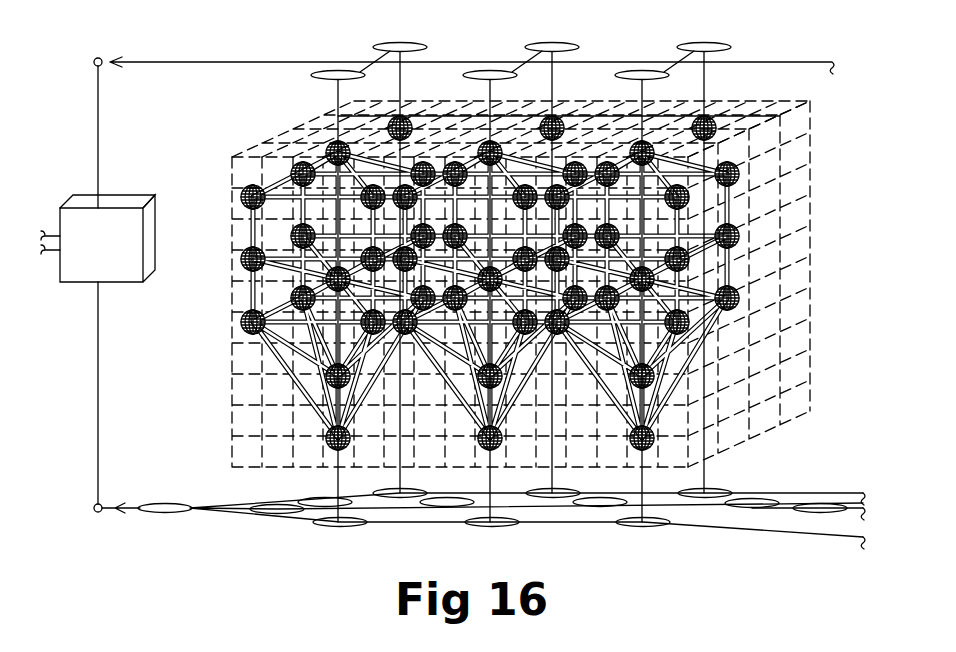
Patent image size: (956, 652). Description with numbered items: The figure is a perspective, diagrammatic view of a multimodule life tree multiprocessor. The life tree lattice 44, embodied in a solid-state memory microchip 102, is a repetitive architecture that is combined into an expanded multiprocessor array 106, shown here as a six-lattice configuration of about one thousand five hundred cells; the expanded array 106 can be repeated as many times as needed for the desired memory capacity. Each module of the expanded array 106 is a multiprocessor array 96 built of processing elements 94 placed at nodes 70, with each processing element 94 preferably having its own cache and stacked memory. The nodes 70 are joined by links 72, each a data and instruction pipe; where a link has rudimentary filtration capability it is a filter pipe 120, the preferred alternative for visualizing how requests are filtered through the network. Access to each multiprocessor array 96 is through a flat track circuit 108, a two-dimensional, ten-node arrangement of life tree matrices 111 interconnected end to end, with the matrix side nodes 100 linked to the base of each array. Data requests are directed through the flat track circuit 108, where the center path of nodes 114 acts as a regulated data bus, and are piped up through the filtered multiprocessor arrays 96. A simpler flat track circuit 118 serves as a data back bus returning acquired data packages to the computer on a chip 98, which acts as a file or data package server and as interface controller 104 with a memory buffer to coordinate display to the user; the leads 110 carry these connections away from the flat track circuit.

The life tree lattice 44 is at (236, 169).
The node 70 is at (325, 381).
The link 72 is at (248, 222).
The processing element 94 is at (415, 120).
The multiprocessor array 96 is at (248, 290).
The computer on a chip 98 is at (110, 203).
The number one node 100 is at (322, 441).
The memory microchip 102 is at (812, 197).
The interface controller 104 is at (110, 276).
The expanded multiprocessor array 106 is at (812, 277).
The flat track circuit 108 is at (268, 518).
The output leads 110 is at (813, 521).
The life tree matrix 111 is at (352, 528).
The center path of nodes 114 is at (256, 503).
The flat track circuit 118 is at (600, 62).
The filter pipe 120 is at (472, 352).